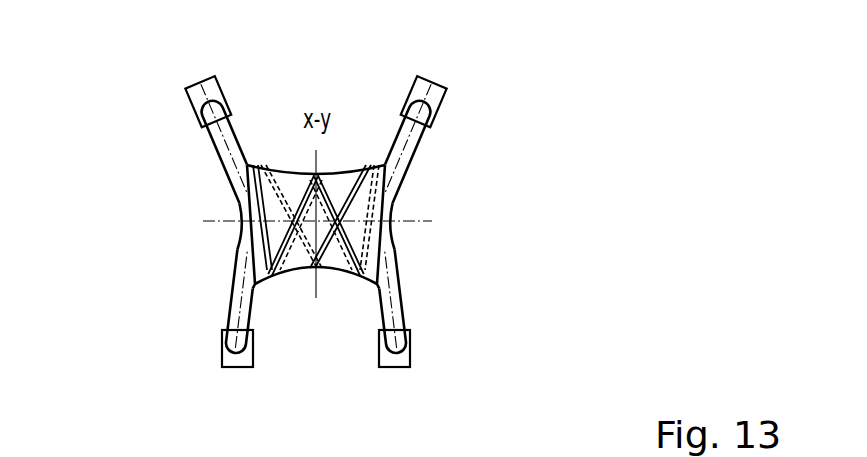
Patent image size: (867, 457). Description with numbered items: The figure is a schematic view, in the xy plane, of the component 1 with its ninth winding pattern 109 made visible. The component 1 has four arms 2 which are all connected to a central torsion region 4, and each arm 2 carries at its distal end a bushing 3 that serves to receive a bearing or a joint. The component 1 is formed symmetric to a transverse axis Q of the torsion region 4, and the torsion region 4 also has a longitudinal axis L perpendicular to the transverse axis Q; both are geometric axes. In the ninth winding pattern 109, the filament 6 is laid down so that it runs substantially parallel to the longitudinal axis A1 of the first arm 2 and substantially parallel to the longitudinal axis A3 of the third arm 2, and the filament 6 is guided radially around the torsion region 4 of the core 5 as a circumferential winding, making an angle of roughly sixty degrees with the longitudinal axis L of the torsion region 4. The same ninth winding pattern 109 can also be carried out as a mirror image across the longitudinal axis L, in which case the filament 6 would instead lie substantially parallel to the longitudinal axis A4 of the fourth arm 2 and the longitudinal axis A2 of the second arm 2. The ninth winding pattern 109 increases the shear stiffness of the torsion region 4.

The component 1 is at (150, 104).
The arm 2 is at (238, 142).
The bushing 3 is at (210, 92).
The torsion region 4 is at (337, 280).
The core 5 is at (393, 292).
The filament 6 is at (257, 207).
The ninth winding pattern 109 is at (251, 246).
The longitudinal axis of the first arm A1 is at (233, 140).
The longitudinal axis of the second arm A2 is at (390, 313).
The longitudinal axis of the third arm A3 is at (418, 130).
The longitudinal axis of the fourth arm A4 is at (235, 290).
The longitudinal axis L is at (220, 222).
The transverse axis Q is at (313, 290).